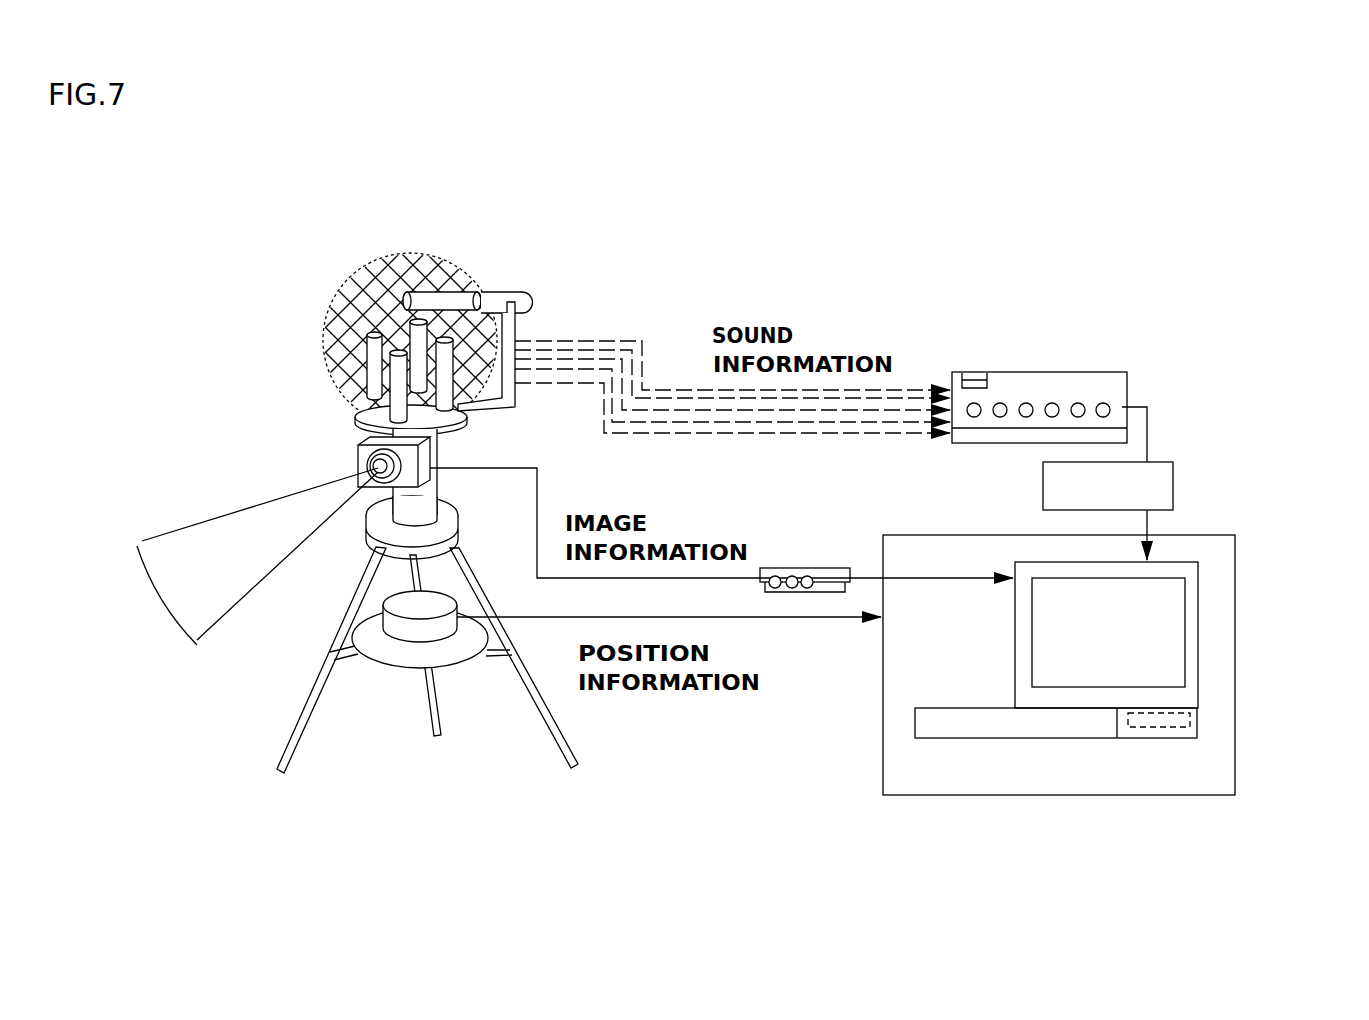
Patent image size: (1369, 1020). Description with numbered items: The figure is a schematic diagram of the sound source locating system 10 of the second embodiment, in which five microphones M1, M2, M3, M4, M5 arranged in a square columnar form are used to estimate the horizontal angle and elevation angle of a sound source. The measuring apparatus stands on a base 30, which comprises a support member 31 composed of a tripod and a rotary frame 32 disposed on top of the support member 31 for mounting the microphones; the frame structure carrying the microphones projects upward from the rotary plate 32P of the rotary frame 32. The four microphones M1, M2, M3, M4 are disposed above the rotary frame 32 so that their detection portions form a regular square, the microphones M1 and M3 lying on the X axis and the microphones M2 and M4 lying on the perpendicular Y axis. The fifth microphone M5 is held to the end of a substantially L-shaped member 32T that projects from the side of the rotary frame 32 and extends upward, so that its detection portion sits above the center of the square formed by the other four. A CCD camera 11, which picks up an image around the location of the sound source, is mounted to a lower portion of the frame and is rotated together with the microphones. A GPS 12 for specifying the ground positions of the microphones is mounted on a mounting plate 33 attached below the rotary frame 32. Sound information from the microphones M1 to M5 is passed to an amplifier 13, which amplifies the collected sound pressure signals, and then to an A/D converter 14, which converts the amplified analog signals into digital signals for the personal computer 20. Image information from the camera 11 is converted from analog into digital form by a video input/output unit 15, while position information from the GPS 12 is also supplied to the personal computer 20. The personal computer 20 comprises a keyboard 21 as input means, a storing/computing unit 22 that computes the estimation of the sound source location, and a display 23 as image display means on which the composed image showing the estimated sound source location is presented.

The sound collecting apparatus 10 is at (287, 345).
The microphone M1 is at (448, 407).
The microphone M2 is at (415, 326).
The microphone M3 is at (372, 338).
The microphone M4 is at (397, 388).
The fifth microphone M5 is at (458, 275).
The substantially L-shaped member 32T is at (513, 347).
The CCD camera 11 is at (352, 462).
The rotary frame 32 is at (391, 517).
The rotary plate 32P is at (448, 522).
The GPS 12 is at (417, 615).
The mounting plate 33 is at (450, 653).
The support member 31 is at (547, 700).
The base 30 is at (313, 707).
The amplifier 13 is at (1108, 392).
The A/D converter 14 is at (1160, 460).
The video input/output unit 15 is at (813, 567).
The personal computer 20 is at (1105, 624).
The keyboard 21 is at (998, 720).
The storing/computing unit 22 is at (1200, 712).
The display 23 is at (1170, 630).